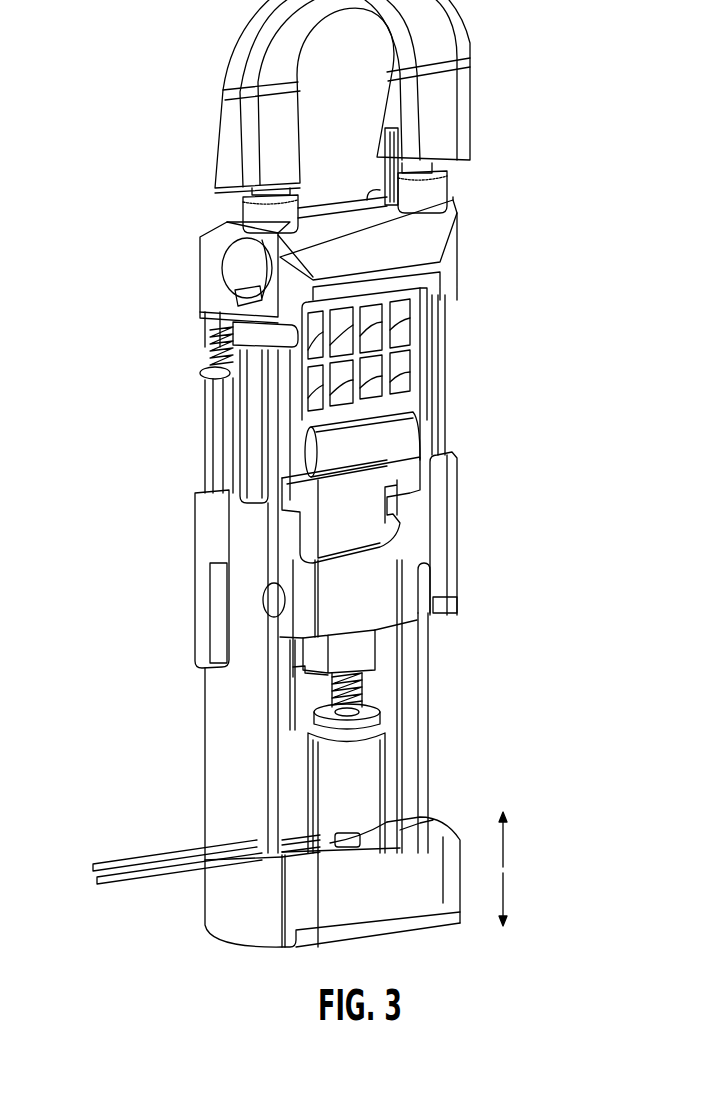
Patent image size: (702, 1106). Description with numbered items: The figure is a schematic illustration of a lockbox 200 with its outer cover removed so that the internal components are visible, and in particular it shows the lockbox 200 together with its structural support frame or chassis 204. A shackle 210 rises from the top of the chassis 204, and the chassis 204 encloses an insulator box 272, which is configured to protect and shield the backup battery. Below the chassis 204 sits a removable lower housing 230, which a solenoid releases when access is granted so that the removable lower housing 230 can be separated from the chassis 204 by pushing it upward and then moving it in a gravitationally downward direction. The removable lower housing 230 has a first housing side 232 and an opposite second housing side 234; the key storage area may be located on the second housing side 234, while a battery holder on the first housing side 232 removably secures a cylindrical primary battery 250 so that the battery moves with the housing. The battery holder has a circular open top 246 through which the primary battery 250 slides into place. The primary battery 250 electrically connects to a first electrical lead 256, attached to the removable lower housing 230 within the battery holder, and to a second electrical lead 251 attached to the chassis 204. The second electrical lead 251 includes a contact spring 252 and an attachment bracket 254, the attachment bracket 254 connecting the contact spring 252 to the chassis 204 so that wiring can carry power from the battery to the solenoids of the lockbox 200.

The lockbox 200 is at (117, 108).
The shackle 210 is at (455, 133).
The chassis 204 is at (440, 262).
The insulator box 272 is at (330, 490).
The removable lower housing 230 is at (230, 712).
The second housing side 234 is at (205, 752).
The second electrical lead 251 is at (295, 682).
The attachment bracket 254 is at (362, 653).
The contact spring 252 is at (362, 692).
The primary battery 250 is at (367, 720).
The open top 246 is at (385, 735).
The first housing side 232 is at (300, 808).
The first electrical lead 256 is at (350, 842).